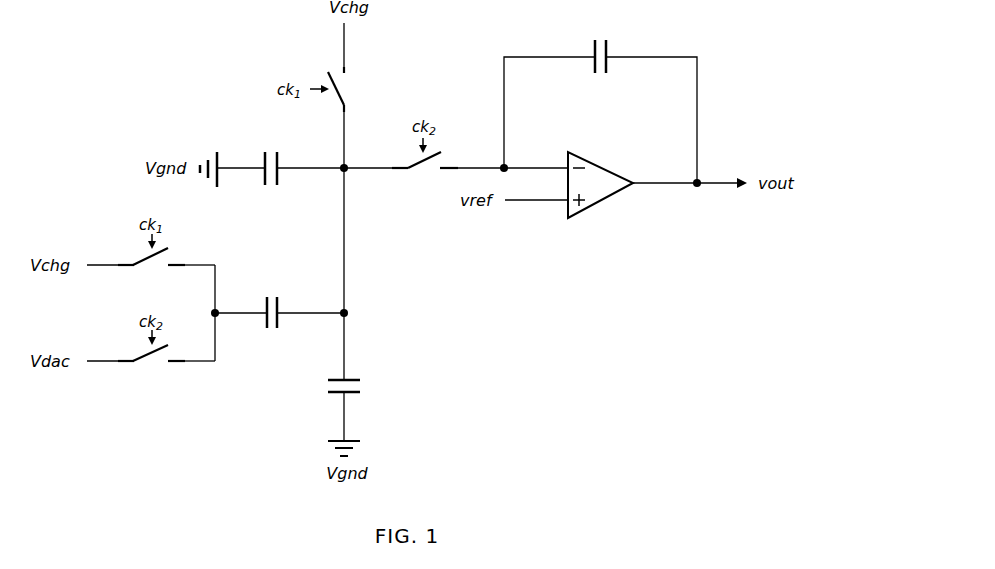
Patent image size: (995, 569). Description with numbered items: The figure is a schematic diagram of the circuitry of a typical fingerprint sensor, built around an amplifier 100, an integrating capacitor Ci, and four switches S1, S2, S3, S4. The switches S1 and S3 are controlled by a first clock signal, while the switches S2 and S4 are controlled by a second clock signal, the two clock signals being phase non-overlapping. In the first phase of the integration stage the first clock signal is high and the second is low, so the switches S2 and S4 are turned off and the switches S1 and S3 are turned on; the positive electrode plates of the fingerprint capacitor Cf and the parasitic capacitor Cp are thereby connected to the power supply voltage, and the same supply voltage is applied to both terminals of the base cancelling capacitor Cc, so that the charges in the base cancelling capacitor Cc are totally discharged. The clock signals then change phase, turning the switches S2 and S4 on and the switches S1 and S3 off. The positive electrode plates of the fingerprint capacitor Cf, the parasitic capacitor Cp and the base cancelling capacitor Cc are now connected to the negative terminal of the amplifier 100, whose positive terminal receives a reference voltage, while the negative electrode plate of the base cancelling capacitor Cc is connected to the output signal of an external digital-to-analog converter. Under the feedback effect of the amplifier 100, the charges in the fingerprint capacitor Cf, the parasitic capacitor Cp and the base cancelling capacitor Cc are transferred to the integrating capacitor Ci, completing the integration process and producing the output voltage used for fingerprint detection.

The amplifier 100 is at (585, 217).
The switch S1 is at (349, 89).
The switch S2 is at (425, 175).
The switch S3 is at (151, 272).
The switch S4 is at (151, 368).
The fingerprint capacitor Cf is at (276, 155).
The base cancelling capacitor Cc is at (276, 300).
The parasitic capacitor Cp is at (357, 386).
The integrating capacitor Ci is at (604, 44).